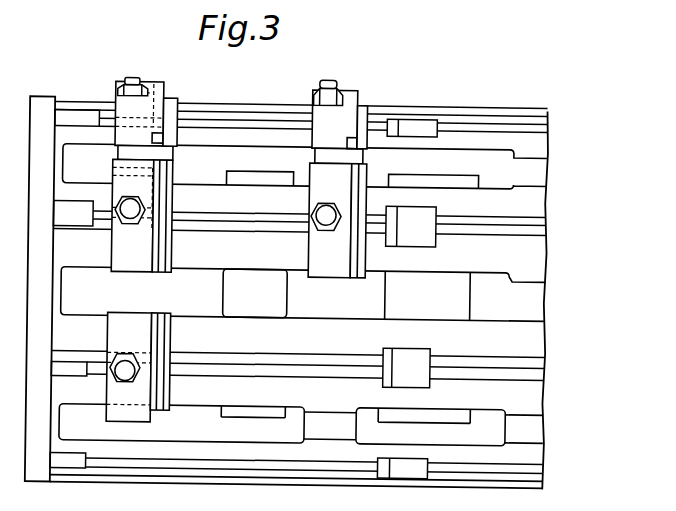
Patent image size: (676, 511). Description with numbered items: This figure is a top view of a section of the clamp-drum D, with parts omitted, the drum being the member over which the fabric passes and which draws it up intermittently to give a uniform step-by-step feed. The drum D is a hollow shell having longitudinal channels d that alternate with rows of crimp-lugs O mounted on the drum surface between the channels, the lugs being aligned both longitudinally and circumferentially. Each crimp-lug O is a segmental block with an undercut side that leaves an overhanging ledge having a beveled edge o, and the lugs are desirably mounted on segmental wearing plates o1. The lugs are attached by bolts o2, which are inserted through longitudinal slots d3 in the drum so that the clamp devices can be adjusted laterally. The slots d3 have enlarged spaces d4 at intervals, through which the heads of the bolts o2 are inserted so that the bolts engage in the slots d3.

The crimp-lug O is at (153, 92).
The beveled edge o is at (165, 92).
The segmental wearing plate o1 is at (172, 110).
The bolt o2 is at (131, 86).
The longitudinal channel d is at (540, 168).
The longitudinal slot d3 is at (545, 126).
The enlarged space d4 is at (420, 240).
The clamp-drum D is at (320, 294).